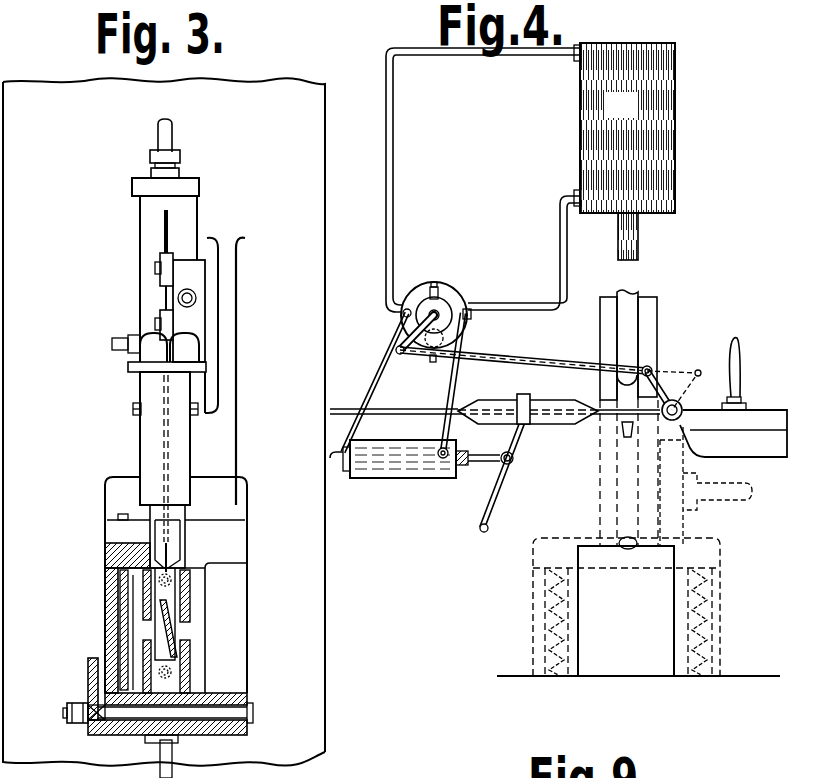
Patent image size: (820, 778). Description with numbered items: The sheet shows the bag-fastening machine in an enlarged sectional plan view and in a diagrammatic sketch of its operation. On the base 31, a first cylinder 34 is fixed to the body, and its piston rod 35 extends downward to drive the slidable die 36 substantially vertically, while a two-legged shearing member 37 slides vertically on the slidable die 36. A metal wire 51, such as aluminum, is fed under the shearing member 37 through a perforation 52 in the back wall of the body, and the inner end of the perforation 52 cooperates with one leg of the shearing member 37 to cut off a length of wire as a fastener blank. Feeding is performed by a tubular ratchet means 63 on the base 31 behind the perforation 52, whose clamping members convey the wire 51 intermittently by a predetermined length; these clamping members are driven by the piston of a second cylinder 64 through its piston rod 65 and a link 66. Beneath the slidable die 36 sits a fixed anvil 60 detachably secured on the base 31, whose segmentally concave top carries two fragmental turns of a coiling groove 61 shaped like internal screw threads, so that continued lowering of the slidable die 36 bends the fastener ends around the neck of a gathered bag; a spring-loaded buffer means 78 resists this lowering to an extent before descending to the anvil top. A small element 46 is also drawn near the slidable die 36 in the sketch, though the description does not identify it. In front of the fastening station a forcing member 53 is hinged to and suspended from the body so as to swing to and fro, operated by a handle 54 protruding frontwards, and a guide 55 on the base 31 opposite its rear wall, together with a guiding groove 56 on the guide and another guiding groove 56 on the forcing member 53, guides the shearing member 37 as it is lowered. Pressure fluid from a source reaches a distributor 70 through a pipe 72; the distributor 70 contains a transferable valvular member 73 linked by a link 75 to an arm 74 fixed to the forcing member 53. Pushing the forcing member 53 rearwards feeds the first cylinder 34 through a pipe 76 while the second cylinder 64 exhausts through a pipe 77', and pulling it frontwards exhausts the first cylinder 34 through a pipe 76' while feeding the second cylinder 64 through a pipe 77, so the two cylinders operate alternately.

In FIG. 3, the base 31 is at (318, 750).
In FIG. 4, the first cylinder 34 is at (609, 115).
In FIG. 4, the piston rod 35 is at (641, 247).
In FIG. 4, the slidable die 36 is at (628, 300).
In FIG. 4, the shearing member 37 is at (605, 323).
In FIG. 4, the stop 46 is at (622, 434).
In FIG. 3, the metal wire 51 is at (163, 238).
In FIG. 4, the metal wire 51 is at (343, 410).
In FIG. 3, the perforation 52 is at (167, 553).
In FIG. 3, the forcing member 53 is at (198, 680).
In FIG. 4, the forcing member 53 is at (762, 410).
In FIG. 4, the handle 54 is at (738, 342).
In FIG. 3, the guide 55 is at (192, 605).
In FIG. 3, the guiding groove 56 is at (155, 597).
In FIG. 3, the fixed anvil 60 is at (160, 628).
In FIG. 4, the fixed anvil 60 is at (614, 632).
In FIG. 3, the coiling groove 61 is at (175, 637).
In FIG. 3, the ratchet means 63 is at (190, 470).
In FIG. 4, the ratchet means 63 is at (546, 424).
In FIG. 3, the second cylinder 64 is at (138, 306).
In FIG. 4, the second cylinder 64 is at (404, 478).
In FIG. 4, the piston rod 65 is at (470, 465).
In FIG. 4, the link 66 is at (516, 480).
In FIG. 4, the distributor 70 is at (452, 282).
In FIG. 4, the pipe 72 is at (430, 285).
In FIG. 4, the valvular member 73 is at (410, 305).
In FIG. 3, the arm 74 is at (88, 672).
In FIG. 4, the link 75 is at (575, 358).
In FIG. 4, the pipe 76 is at (483, 178).
In FIG. 4, the pipe 76' is at (524, 250).
In FIG. 3, the pipe 77 is at (192, 148).
In FIG. 4, the pipe 77 is at (374, 382).
In FIG. 3, the pipe 77' is at (118, 353).
In FIG. 4, the pipe 77' is at (434, 383).
In FIG. 4, the spring-loaded buffer means 78 is at (720, 565).